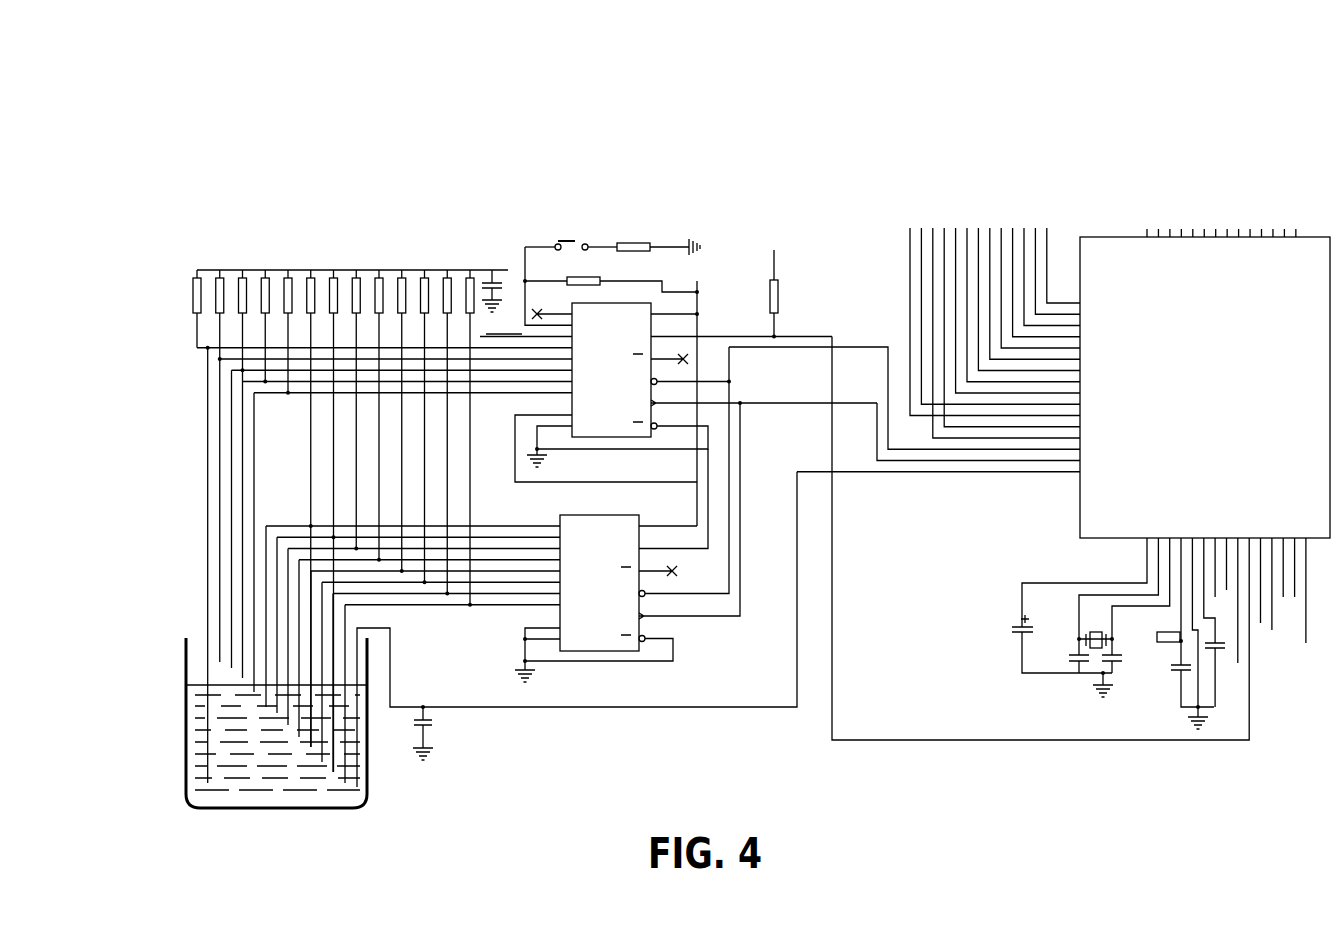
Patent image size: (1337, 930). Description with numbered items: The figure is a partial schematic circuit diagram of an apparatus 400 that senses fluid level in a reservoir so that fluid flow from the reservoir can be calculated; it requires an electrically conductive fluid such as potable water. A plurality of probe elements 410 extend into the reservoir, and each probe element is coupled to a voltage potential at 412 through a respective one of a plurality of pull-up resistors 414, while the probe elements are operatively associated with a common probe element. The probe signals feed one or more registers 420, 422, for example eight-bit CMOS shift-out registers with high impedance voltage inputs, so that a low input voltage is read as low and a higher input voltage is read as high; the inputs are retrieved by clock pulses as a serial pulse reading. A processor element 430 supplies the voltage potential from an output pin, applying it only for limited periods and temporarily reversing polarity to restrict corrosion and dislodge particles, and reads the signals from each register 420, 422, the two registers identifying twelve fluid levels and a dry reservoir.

The apparatus 400 is at (348, 137).
The probe elements 410 is at (200, 628).
The voltage potential 412 is at (216, 262).
The pull-up resistors 414 is at (181, 294).
The register 420 is at (594, 617).
The register 422 is at (607, 325).
The processor element 430 is at (1110, 260).